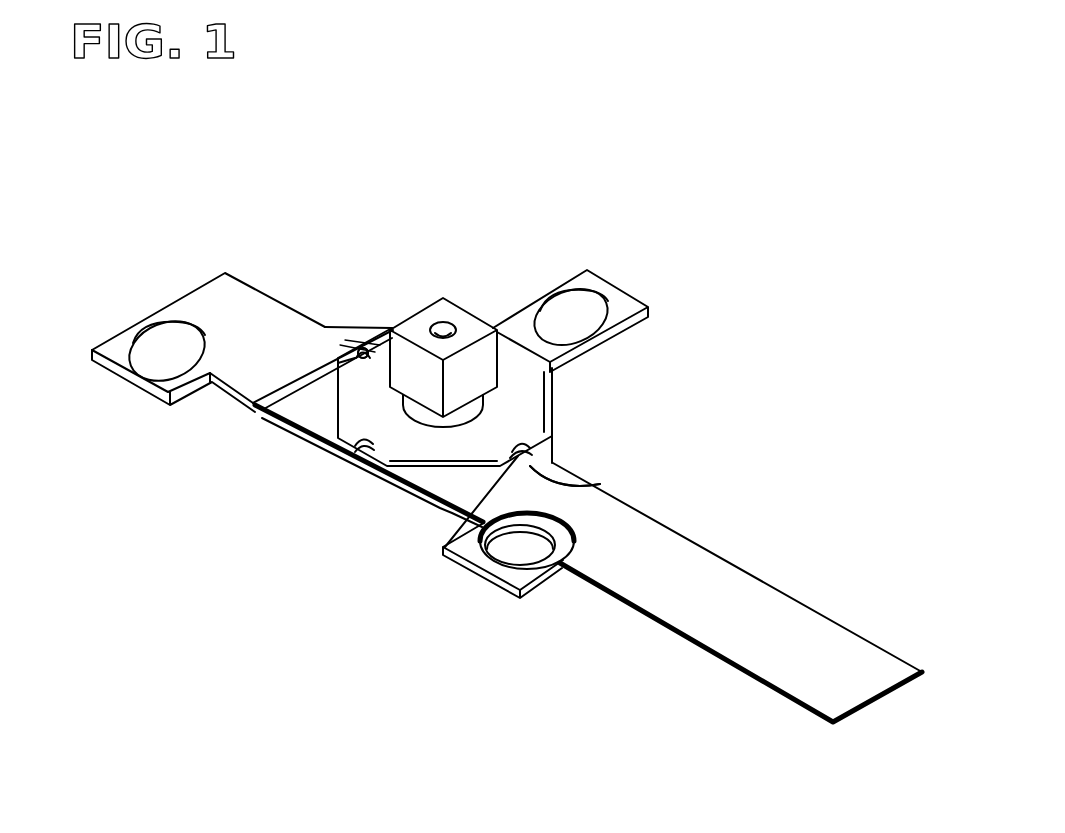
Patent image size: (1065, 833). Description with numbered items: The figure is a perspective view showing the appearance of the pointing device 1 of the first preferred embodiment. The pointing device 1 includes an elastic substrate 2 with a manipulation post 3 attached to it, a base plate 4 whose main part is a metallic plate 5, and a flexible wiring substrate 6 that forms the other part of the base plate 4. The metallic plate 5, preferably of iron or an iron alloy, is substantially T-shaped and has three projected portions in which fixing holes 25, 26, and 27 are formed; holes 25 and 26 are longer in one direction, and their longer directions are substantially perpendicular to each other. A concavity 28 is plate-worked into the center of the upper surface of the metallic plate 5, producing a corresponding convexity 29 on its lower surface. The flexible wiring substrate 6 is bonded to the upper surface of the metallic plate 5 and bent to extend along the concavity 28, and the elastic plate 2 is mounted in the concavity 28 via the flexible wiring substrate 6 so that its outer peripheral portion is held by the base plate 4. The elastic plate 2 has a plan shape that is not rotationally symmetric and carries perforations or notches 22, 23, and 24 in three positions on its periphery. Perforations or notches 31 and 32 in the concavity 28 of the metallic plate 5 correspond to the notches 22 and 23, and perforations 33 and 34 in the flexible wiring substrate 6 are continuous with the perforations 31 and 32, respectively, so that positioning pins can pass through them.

The pointing device 1 is at (302, 216).
The elastic substrate 2 is at (553, 395).
The manipulation post 3 is at (448, 311).
The base plate 4 is at (588, 660).
The metallic plate 5 is at (493, 595).
The flexible wiring substrate 6 is at (608, 597).
The notch 22 is at (368, 355).
The notch 23 is at (535, 441).
The notch 24 is at (362, 455).
The fixing hole 25 is at (150, 357).
The fixing hole 26 is at (603, 303).
The fixing hole 27 is at (467, 557).
The concavity 28 is at (312, 403).
The convexity 29 is at (398, 495).
The perforation 31 is at (360, 350).
The perforation 32 is at (600, 484).
The perforation 33 is at (360, 349).
The perforation 34 is at (522, 501).